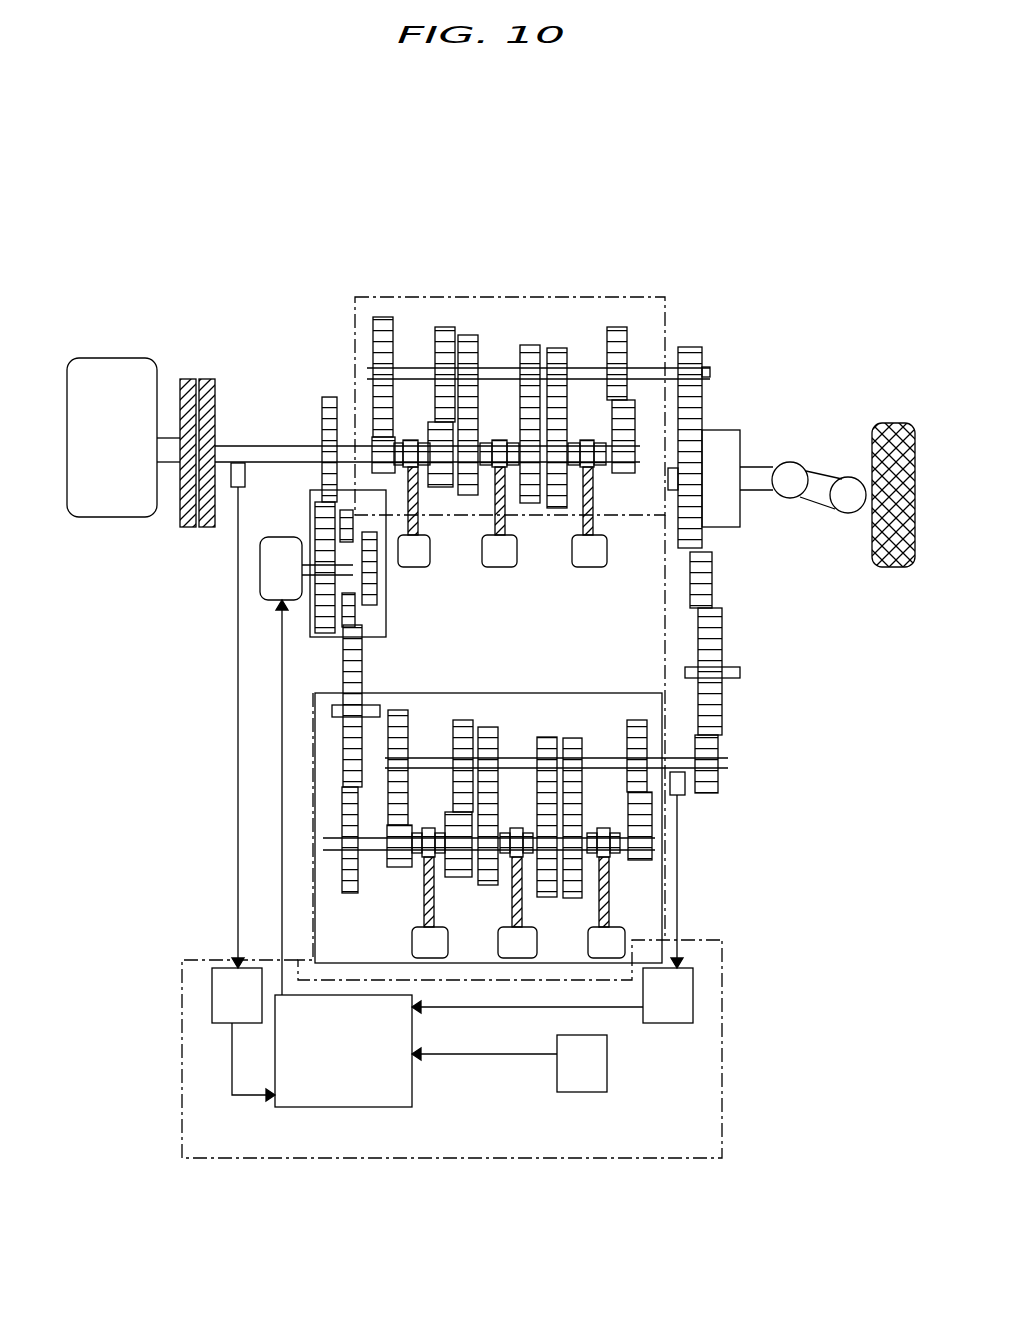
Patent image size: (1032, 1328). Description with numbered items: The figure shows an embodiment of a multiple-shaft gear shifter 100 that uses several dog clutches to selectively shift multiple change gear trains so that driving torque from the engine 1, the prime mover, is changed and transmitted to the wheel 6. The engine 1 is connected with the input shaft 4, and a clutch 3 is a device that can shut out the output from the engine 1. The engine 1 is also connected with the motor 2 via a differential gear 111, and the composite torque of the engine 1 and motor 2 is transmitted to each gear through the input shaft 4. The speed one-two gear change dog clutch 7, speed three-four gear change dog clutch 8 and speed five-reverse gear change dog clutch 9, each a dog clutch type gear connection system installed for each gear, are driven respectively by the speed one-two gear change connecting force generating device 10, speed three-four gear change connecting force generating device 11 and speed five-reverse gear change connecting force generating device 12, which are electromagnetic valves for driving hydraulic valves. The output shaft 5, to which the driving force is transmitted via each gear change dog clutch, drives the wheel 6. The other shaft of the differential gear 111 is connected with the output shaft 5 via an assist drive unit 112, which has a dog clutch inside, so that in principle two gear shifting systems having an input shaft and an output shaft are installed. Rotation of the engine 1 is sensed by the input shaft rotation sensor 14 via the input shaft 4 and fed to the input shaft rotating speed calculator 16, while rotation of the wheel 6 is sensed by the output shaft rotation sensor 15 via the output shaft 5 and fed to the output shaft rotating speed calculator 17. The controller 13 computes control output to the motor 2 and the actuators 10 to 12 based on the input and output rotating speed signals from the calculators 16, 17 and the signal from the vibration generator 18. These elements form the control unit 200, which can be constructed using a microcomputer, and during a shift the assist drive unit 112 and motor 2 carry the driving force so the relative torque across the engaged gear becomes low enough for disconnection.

The engine 1 is at (141, 357).
The motor 2 is at (260, 582).
The clutch 3 is at (210, 378).
The input shaft 4 is at (312, 445).
The output shaft 5 is at (645, 366).
The wheel 6 is at (910, 567).
The speed 1-2 gear change dog clutch 7 is at (412, 440).
The speed 3-4 gear change dog clutch 8 is at (500, 440).
The speed 5-R gear change dog clutch 9 is at (588, 440).
The speed 1-2 gear change connecting force generating device 10 is at (412, 567).
The speed 3-4 gear change connecting force generating device 11 is at (496, 567).
The speed 5-R gear change connecting force generating device 12 is at (588, 567).
The controller 13 is at (412, 1092).
The input shaft rotation sensor 14 is at (233, 488).
The output shaft rotation sensor 15 is at (678, 796).
The input shaft rotating speed calculator 16 is at (212, 985).
The output shaft rotating speed calculator 17 is at (693, 1003).
The vibration generator 18 is at (607, 1065).
The gear shifter 100 is at (648, 311).
The differential gear 111 is at (383, 637).
The assist drive unit 112 is at (313, 756).
The control unit 200 is at (207, 1105).